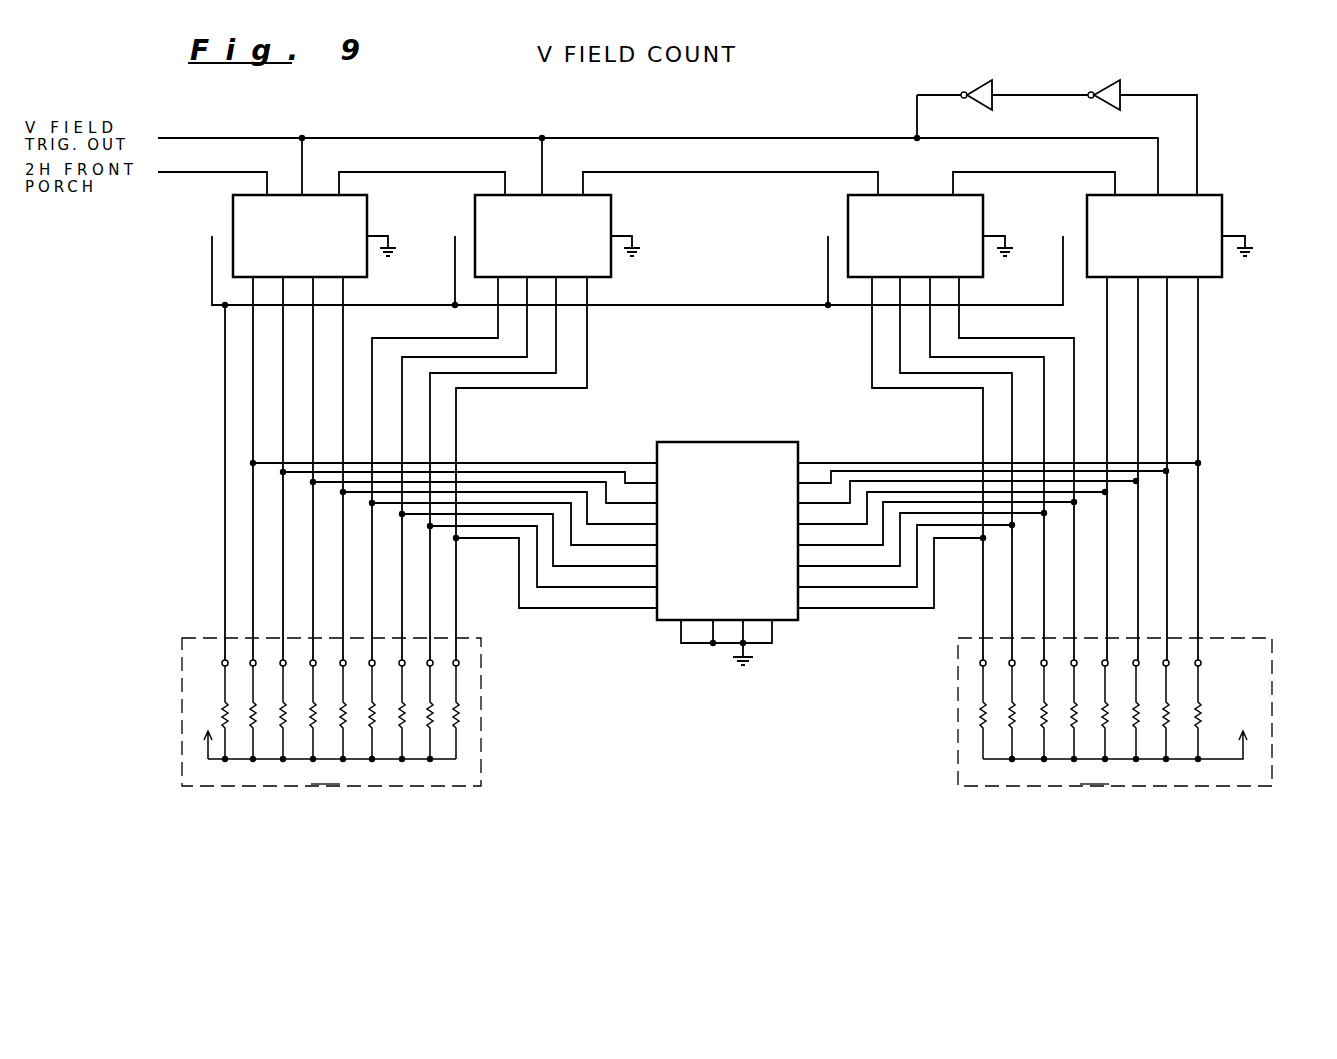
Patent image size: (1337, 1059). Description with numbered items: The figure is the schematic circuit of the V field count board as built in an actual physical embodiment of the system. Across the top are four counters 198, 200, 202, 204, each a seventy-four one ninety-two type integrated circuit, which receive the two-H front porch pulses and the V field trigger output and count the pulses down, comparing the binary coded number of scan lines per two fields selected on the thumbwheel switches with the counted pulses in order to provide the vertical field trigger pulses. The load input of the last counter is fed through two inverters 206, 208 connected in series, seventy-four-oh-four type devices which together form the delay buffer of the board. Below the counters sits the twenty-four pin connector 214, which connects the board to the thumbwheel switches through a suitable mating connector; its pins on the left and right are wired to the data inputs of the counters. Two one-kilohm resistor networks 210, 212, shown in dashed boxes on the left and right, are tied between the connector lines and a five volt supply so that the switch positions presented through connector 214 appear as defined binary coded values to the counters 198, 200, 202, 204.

The counter 198 is at (367, 197).
The counter 200 is at (611, 197).
The counter 202 is at (848, 198).
The counter 204 is at (1222, 205).
The inverter 206 is at (970, 82).
The inverter 208 is at (1112, 82).
The resistor network 210 is at (326, 704).
The resistor network 212 is at (1115, 704).
The connector 214 is at (711, 440).